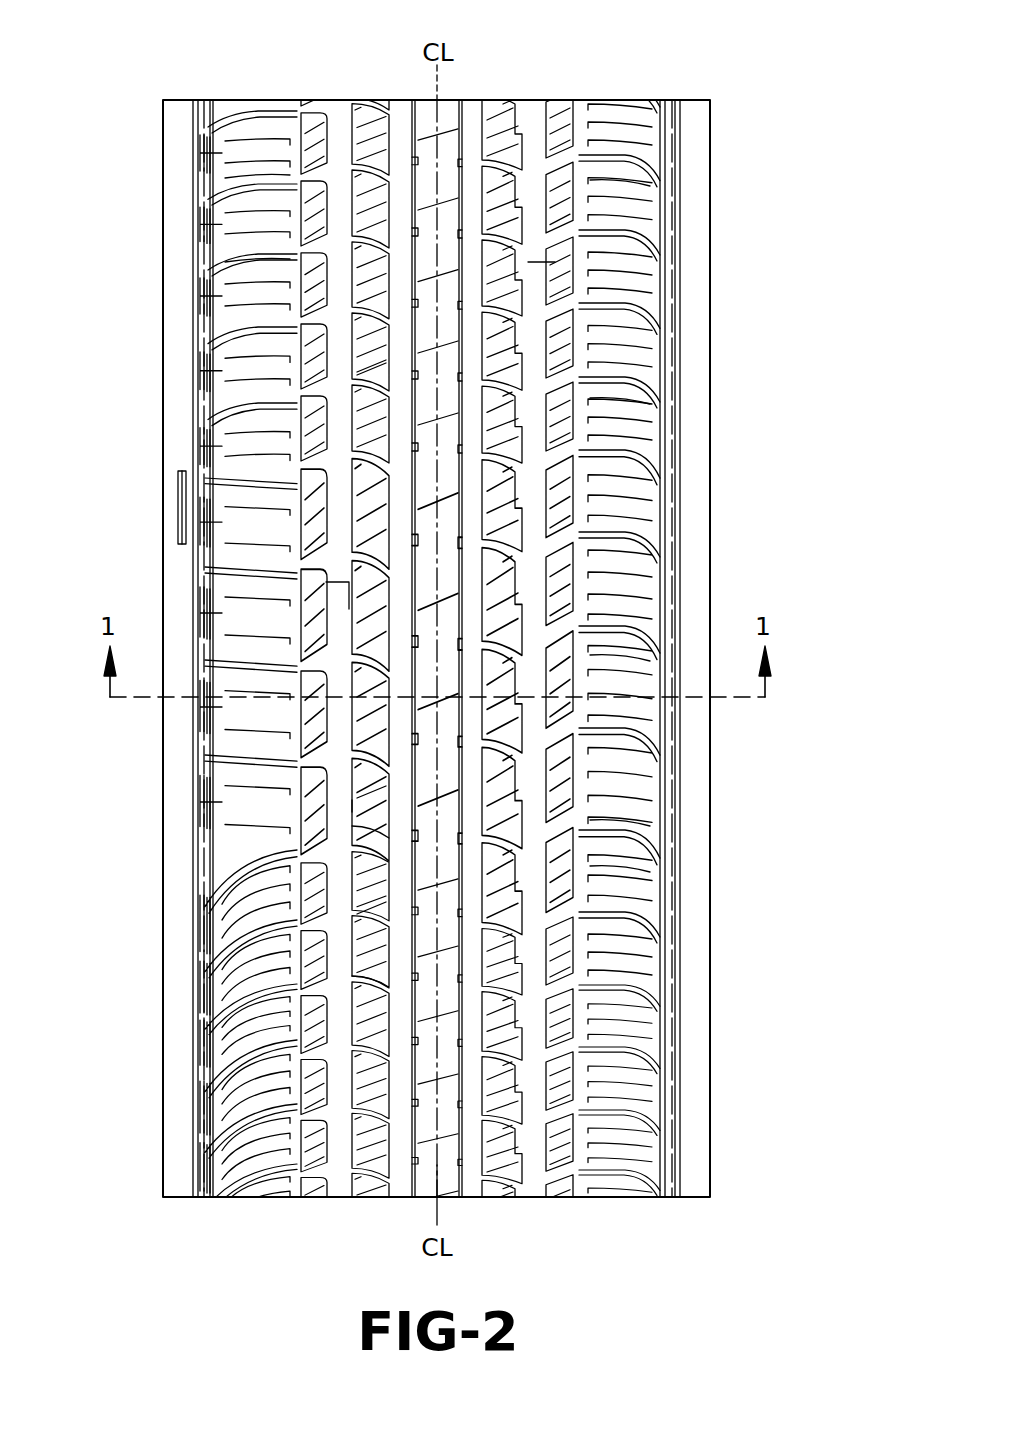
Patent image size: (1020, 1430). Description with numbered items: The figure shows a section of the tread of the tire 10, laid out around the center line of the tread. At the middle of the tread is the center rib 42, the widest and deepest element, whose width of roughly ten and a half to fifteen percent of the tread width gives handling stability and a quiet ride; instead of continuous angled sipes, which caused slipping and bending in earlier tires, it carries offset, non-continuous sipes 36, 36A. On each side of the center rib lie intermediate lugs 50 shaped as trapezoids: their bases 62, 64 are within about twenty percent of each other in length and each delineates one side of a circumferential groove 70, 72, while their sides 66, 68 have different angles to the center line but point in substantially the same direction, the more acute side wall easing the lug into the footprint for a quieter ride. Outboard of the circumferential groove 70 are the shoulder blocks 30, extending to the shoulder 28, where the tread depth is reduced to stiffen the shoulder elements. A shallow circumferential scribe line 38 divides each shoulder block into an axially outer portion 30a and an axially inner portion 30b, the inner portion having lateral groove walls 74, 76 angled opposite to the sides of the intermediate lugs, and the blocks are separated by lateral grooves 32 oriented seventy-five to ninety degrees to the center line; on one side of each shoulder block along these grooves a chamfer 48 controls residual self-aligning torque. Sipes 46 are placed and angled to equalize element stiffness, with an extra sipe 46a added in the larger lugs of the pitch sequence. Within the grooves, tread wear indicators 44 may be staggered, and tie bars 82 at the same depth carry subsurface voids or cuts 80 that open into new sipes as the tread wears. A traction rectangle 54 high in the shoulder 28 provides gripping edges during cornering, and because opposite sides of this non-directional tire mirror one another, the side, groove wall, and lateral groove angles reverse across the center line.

The tire 10 is at (124, 122).
The shoulder 28 is at (230, 1196).
The shoulder blocks 30 is at (612, 862).
The axially outer portion 30a is at (610, 118).
The axially inner portion 30b is at (560, 118).
The lateral grooves 32 is at (625, 815).
The offset non-continuous sipe 36 is at (427, 197).
The offset non-continuous sipe 36A is at (445, 197).
The circumferential scribe line 38 is at (296, 110).
The center rib 42 is at (427, 117).
The tread wear indicators 44 is at (338, 592).
The sipes 46 is at (612, 179).
The extra sipe 46a is at (613, 650).
The chamfer 48 is at (631, 386).
The intermediate lugs 50 is at (512, 283).
The traction rectangle 54 is at (200, 458).
The base of trapezoid 62 is at (353, 803).
The base of trapezoid 64 is at (397, 785).
The side lug wall 66 is at (357, 912).
The side lug wall 68 is at (362, 841).
The circumferential groove 70 is at (340, 1163).
The circumferential groove 72 is at (403, 1163).
The lateral groove wall 74 is at (315, 180).
The lateral groove wall 76 is at (320, 250).
The subsurface voids or cuts 80 is at (370, 987).
The tie bars 82 is at (362, 376).